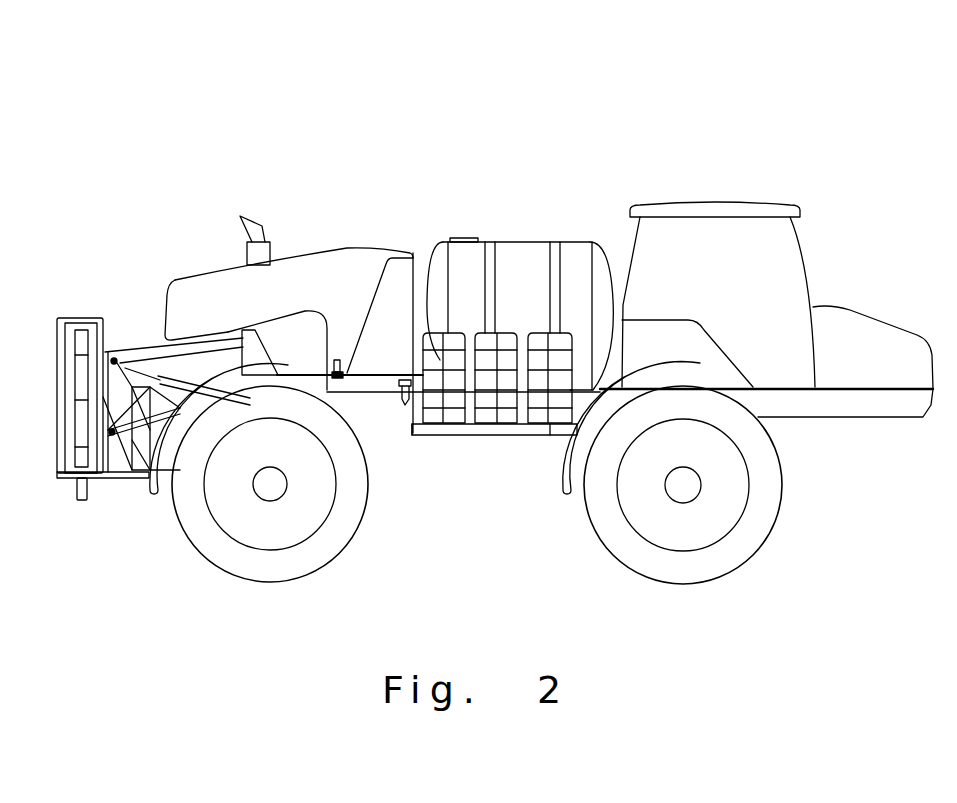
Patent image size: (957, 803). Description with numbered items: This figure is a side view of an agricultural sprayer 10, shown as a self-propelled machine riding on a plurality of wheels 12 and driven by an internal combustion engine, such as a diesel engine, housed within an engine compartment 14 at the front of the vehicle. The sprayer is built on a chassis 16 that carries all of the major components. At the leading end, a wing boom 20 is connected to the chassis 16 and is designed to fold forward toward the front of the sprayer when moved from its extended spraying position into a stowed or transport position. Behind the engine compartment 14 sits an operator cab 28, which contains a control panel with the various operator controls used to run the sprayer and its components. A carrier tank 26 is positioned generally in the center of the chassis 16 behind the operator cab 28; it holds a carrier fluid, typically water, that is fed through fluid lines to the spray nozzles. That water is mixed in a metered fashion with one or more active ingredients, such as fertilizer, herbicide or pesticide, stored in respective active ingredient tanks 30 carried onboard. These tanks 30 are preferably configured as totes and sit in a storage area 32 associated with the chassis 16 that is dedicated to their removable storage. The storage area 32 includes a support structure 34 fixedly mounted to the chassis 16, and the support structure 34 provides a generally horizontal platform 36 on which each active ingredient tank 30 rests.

The agricultural sprayer 10 is at (690, 146).
The wheels 12 is at (202, 538).
The engine compartment 14 is at (343, 247).
The chassis 16 is at (853, 417).
The wing boom 20 is at (83, 302).
The carrier tank 26 is at (513, 242).
The operator cab 28 is at (770, 200).
The active ingredient tanks 30 is at (455, 418).
The storage area 32 is at (411, 457).
The support structure 34 is at (433, 449).
The platform 36 is at (550, 425).